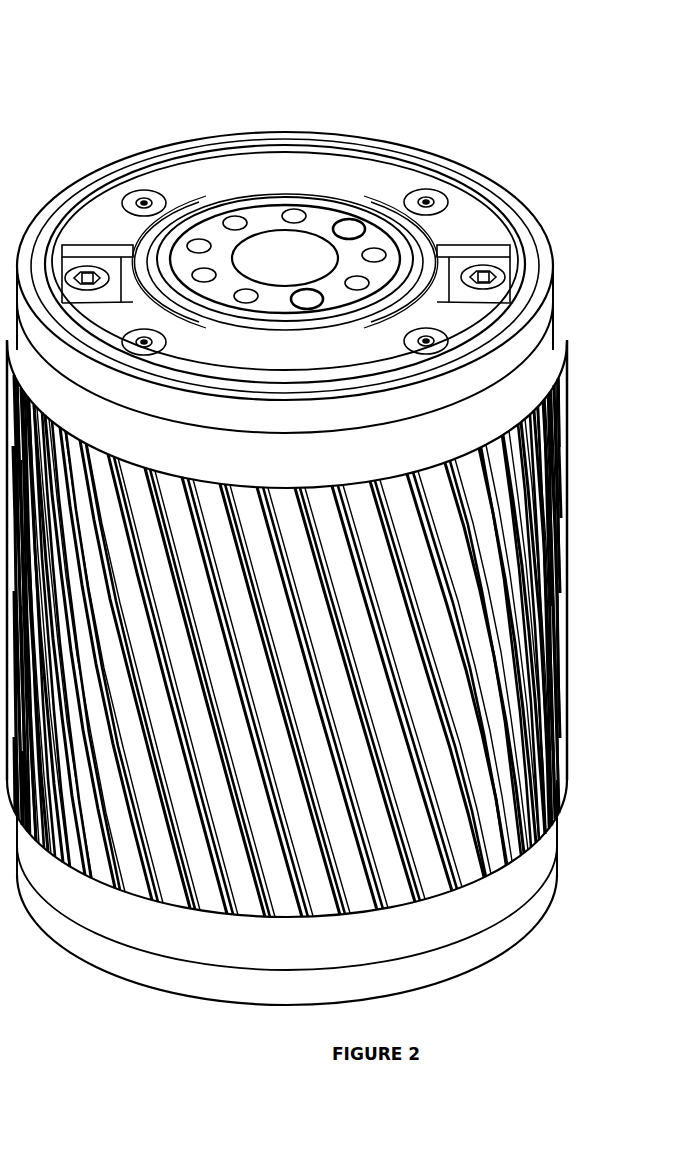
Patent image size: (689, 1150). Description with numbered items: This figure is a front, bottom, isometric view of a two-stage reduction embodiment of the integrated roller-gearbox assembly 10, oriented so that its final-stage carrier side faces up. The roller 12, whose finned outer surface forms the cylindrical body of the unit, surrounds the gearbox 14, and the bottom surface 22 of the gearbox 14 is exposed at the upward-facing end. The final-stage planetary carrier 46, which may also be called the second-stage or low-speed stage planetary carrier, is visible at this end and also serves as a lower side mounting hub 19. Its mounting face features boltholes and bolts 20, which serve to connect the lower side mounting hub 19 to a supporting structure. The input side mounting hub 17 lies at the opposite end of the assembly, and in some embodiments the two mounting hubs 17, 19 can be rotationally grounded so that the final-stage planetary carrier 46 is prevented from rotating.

The integrated roller-gearbox assembly 10 is at (55, 58).
The roller 12 is at (516, 458).
The gearbox 14 is at (305, 190).
The input side mounting hub 17 is at (497, 930).
The lower side mounting hub 19 is at (518, 215).
The boltholes and bolts 20 is at (163, 203).
The bottom surface 22 is at (318, 215).
The final-stage planetary carrier 46 is at (495, 267).